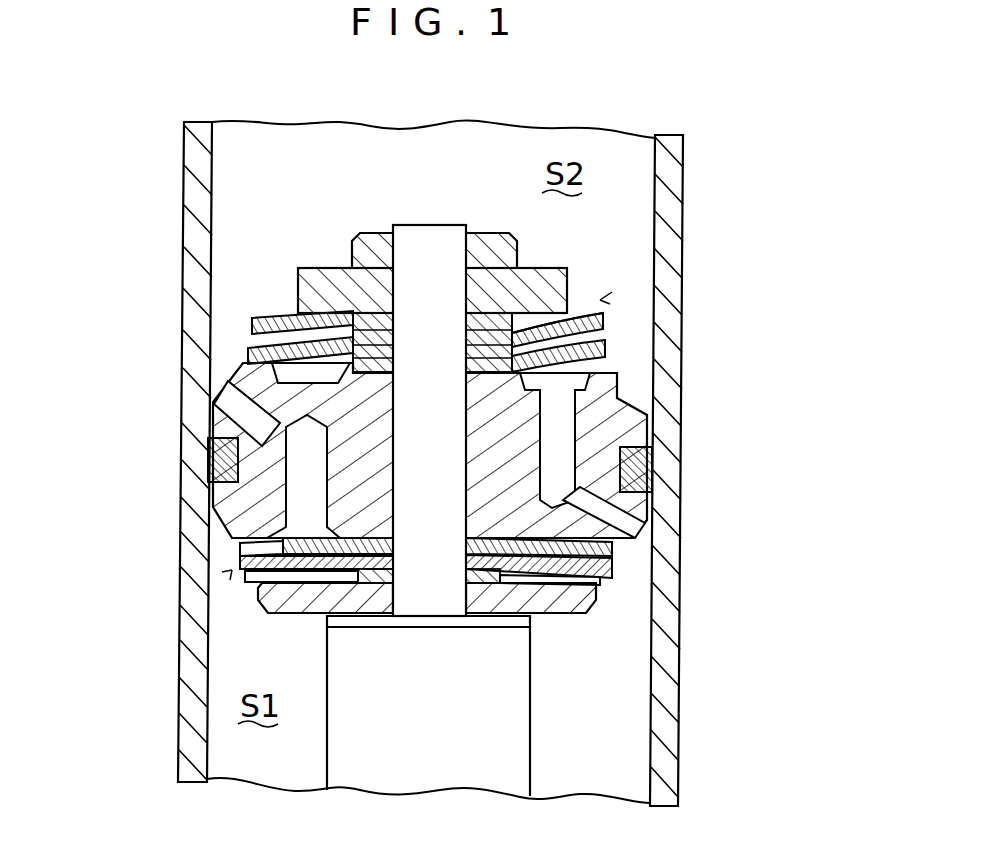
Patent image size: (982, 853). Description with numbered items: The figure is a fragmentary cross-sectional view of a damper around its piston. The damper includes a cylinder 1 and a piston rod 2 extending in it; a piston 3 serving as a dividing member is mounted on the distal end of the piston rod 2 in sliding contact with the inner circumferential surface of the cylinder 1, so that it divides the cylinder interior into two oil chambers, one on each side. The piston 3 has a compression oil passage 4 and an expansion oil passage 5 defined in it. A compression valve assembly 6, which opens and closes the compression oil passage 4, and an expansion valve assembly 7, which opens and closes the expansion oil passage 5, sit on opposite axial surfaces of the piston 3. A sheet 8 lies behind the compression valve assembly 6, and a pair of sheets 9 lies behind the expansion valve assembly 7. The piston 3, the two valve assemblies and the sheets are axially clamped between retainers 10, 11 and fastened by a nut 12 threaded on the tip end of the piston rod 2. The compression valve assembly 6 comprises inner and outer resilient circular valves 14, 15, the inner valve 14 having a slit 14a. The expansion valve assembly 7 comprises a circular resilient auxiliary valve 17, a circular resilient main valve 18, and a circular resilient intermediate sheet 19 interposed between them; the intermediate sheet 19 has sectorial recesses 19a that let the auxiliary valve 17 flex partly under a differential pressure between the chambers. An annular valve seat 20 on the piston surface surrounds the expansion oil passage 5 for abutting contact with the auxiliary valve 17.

The cylinder 1 is at (668, 170).
The piston rod 2 is at (507, 715).
The piston 3 is at (360, 510).
The compression oil passage 4 is at (300, 472).
The expansion oil passage 5 is at (560, 433).
The compression valve assembly 6 is at (232, 570).
The expansion valve assembly 7 is at (600, 300).
The sheet 8 is at (292, 615).
The sheets 9 is at (353, 311).
The retainer 10 is at (573, 608).
The retainer 11 is at (317, 282).
The nut 12 is at (367, 247).
The inner valve 14 is at (240, 562).
The slit 14a is at (590, 557).
The outer valve 15 is at (600, 578).
The auxiliary valve 17 is at (600, 348).
The main valve 18 is at (603, 317).
The intermediate sheet 19 is at (510, 333).
The sectorial recesses 19a is at (600, 333).
The valve seat 20 is at (603, 378).